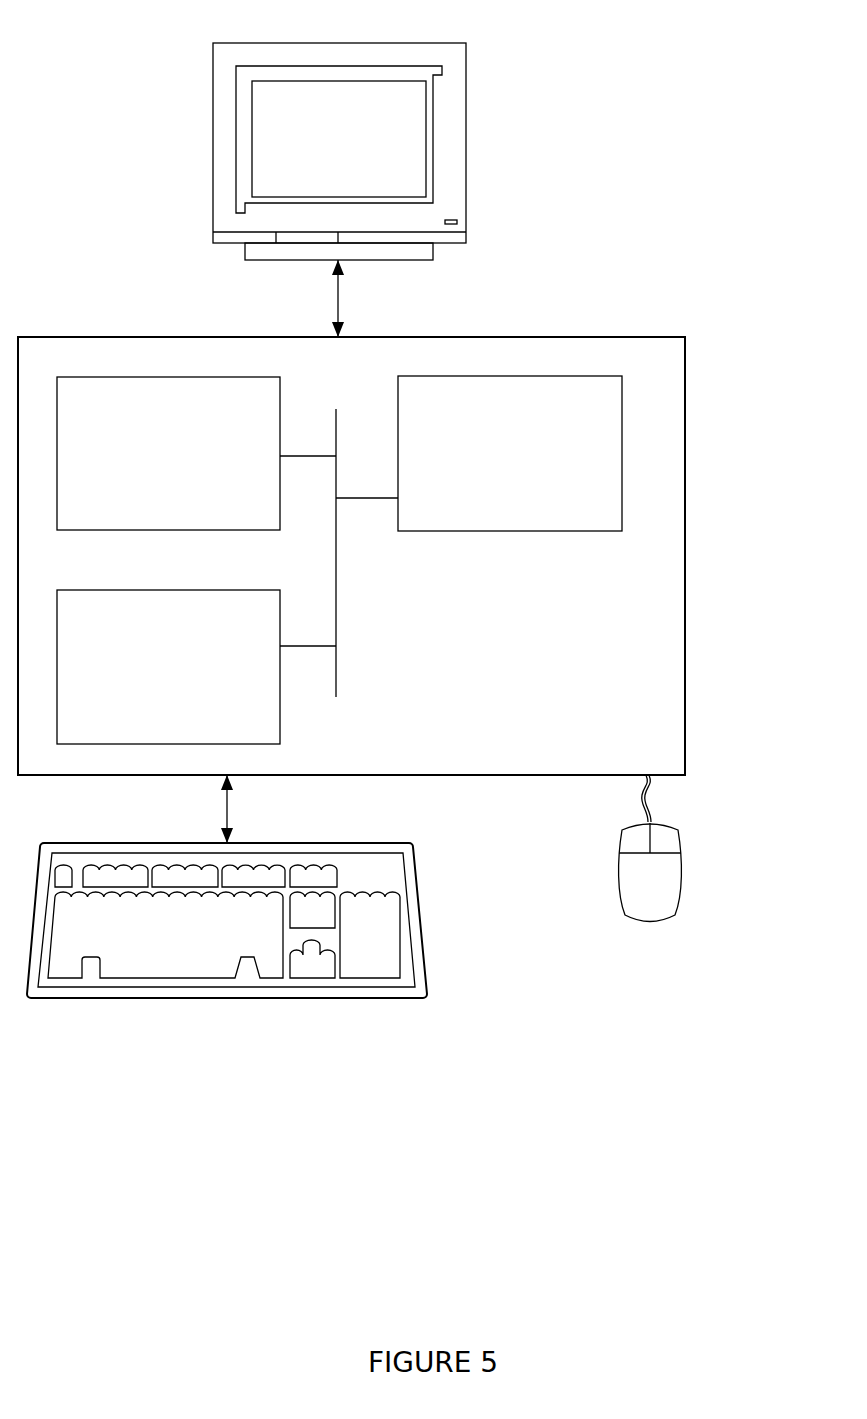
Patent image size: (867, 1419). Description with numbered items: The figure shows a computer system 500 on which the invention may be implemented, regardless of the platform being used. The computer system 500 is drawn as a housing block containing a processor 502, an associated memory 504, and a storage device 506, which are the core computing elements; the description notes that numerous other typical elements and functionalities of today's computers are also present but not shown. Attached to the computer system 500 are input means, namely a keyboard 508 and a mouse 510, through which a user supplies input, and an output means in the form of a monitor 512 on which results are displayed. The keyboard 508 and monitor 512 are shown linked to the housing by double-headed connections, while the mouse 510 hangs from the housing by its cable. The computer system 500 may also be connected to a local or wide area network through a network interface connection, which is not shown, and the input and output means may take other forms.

The computer system 500 is at (665, 208).
The processor 502 is at (506, 465).
The memory 504 is at (148, 466).
The storage device 506 is at (144, 678).
The keyboard 508 is at (139, 956).
The mouse 510 is at (629, 893).
The monitor 512 is at (316, 153).